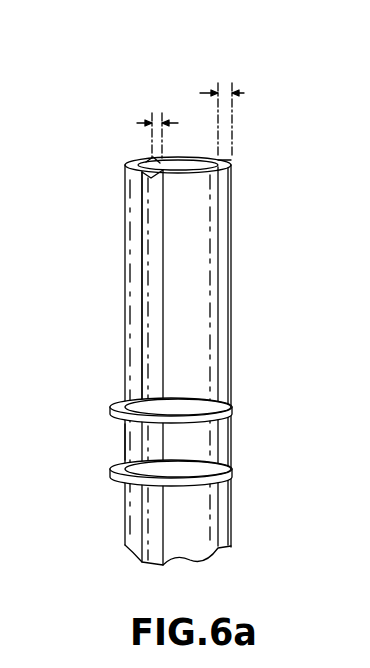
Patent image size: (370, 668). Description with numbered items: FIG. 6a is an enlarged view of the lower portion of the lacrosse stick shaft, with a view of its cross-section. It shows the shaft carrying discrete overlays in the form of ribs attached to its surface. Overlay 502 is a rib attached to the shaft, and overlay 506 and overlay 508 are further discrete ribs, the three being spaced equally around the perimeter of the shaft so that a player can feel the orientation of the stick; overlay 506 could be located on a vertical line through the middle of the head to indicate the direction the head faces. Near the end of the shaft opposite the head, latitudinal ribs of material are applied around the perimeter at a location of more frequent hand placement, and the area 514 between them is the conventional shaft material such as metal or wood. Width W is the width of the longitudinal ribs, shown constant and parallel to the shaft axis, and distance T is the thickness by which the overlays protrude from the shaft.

The overlay 502 is at (230, 282).
The overlay 506 is at (143, 202).
The overlay 508 is at (166, 155).
The area 514 is at (128, 446).
The width W is at (138, 123).
The thickness T is at (244, 93).